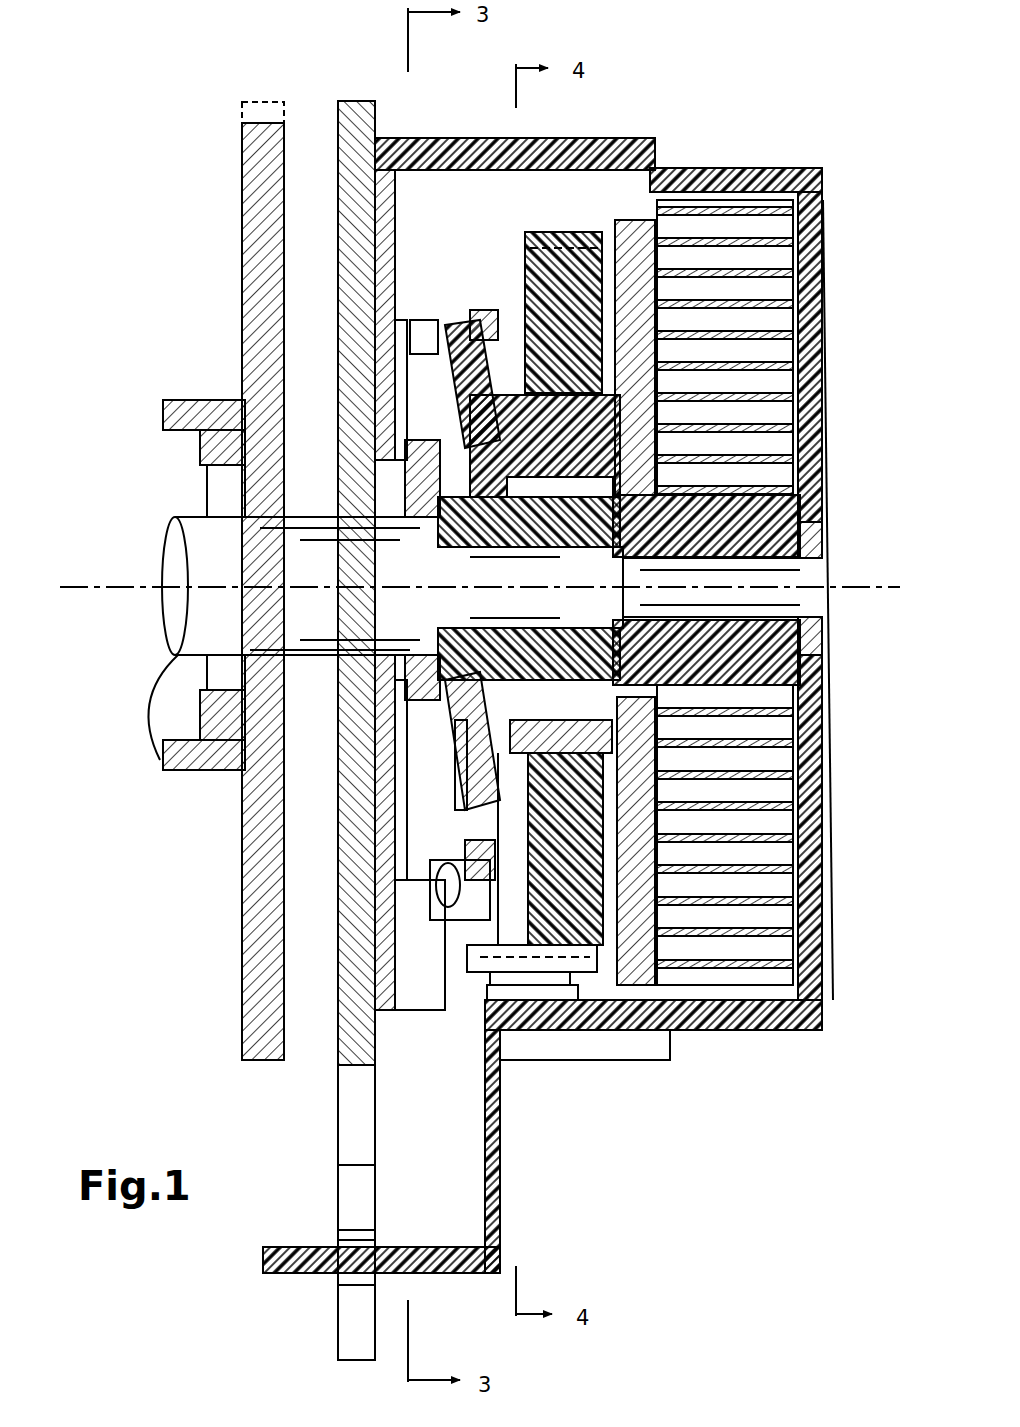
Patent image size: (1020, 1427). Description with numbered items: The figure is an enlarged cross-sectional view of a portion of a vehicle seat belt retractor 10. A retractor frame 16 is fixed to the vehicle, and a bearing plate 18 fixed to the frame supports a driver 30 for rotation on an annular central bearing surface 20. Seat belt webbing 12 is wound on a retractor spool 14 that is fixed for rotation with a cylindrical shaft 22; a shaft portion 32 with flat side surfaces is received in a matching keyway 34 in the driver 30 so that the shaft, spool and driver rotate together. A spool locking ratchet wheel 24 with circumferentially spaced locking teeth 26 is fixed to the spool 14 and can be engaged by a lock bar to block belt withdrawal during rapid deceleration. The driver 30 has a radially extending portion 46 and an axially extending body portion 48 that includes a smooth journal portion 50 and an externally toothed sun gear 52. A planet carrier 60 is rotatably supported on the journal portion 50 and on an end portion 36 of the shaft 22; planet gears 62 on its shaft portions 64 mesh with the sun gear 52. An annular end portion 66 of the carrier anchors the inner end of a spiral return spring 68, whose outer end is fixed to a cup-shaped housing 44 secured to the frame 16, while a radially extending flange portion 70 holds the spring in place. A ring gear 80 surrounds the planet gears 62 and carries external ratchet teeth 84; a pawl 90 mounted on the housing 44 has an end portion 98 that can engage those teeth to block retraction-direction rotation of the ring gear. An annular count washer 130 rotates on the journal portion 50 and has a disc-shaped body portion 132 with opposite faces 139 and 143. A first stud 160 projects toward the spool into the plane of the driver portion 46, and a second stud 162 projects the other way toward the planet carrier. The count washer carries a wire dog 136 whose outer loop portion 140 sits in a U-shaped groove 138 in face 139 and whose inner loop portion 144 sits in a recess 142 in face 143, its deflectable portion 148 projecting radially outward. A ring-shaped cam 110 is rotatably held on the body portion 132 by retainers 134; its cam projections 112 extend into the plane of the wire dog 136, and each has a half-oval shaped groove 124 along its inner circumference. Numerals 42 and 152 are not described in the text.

The vehicle seat belt retractor 10 is at (130, 78).
The seat belt webbing 12 is at (165, 408).
The retractor spool 14 is at (160, 720).
The retractor frame 16 is at (358, 100).
The bearing plate 18 is at (400, 138).
The annular central bearing surface 20 is at (395, 505).
The cylindrical shaft 22 is at (195, 548).
The spool locking ratchet wheel 24 is at (242, 150).
The locking teeth 26 is at (262, 103).
The driver 30 is at (430, 760).
The shaft portion 32 is at (460, 660).
The keyway 34 is at (800, 510).
The end portion of the shaft 36 is at (806, 570).
The bearing 42 is at (810, 580).
The cup-shaped housing 44 is at (808, 170).
The radially extending portion of the driver 46 is at (395, 330).
The axially extending body portion of the driver 48 is at (280, 760).
The journal portion 50 is at (460, 700).
The sun gear 52 is at (660, 655).
The planet carrier 60 is at (635, 220).
The planet gears 62 is at (660, 760).
The shaft portions of the planet carrier 64 is at (660, 720).
The annular end portion of the planet carrier 66 is at (770, 470).
The spiral return spring 68 is at (725, 208).
The radially extending flange portion 70 is at (800, 230).
The ring gear 80 is at (562, 230).
The external ratchet teeth 84 is at (640, 210).
The pawl 90 is at (660, 1035).
The end portion of the pawl 98 is at (480, 1000).
The ring-shaped cam 110 is at (448, 320).
The cam projections 112 is at (440, 930).
The half-oval shaped groove 124 is at (440, 940).
The count washer 130 is at (450, 320).
The body portion of the count washer 132 is at (520, 940).
The retainers 134 is at (488, 310).
The wire dog 136 is at (445, 920).
The U-shaped groove 138 is at (445, 870).
The radially extending face 139 is at (395, 240).
The outer loop portion 140 is at (440, 720).
The recess 142 is at (465, 830).
The axially opposite face 143 is at (605, 978).
The inner loop portion 144 is at (455, 790).
The deflectable portion 148 is at (450, 905).
The stop 152 is at (440, 320).
The first stud 160 is at (400, 370).
The second stud 162 is at (410, 400).